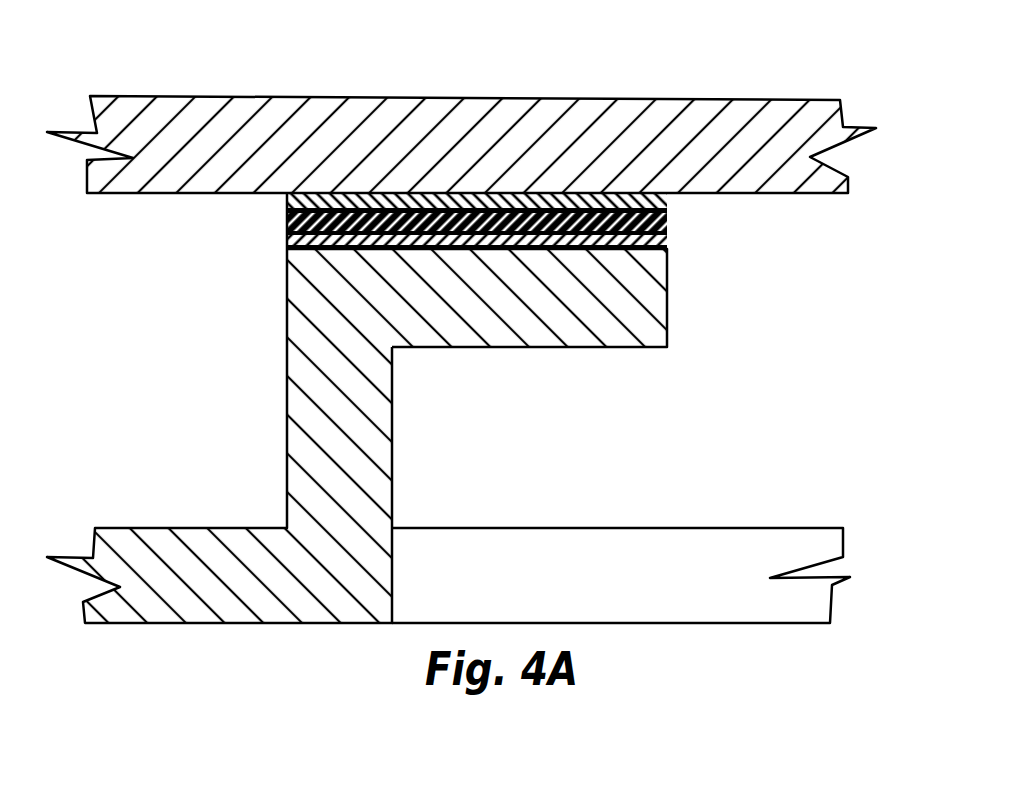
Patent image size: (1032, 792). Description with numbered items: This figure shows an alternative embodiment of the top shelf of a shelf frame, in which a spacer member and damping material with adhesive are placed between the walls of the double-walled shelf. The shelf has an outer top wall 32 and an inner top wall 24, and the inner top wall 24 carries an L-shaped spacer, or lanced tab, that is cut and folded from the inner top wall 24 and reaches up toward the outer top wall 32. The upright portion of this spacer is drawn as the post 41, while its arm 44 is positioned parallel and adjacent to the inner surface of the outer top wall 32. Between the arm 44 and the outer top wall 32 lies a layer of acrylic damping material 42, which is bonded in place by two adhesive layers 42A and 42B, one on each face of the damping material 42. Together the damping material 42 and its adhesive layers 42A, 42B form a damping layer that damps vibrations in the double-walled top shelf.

The outer top wall 32 is at (818, 100).
The inner top wall 24 is at (738, 528).
The support post 41 is at (320, 370).
The arm 44 is at (605, 325).
The acrylic damping material 42 is at (667, 213).
The adhesive layer 42A is at (667, 237).
The adhesive layer 42B is at (667, 202).